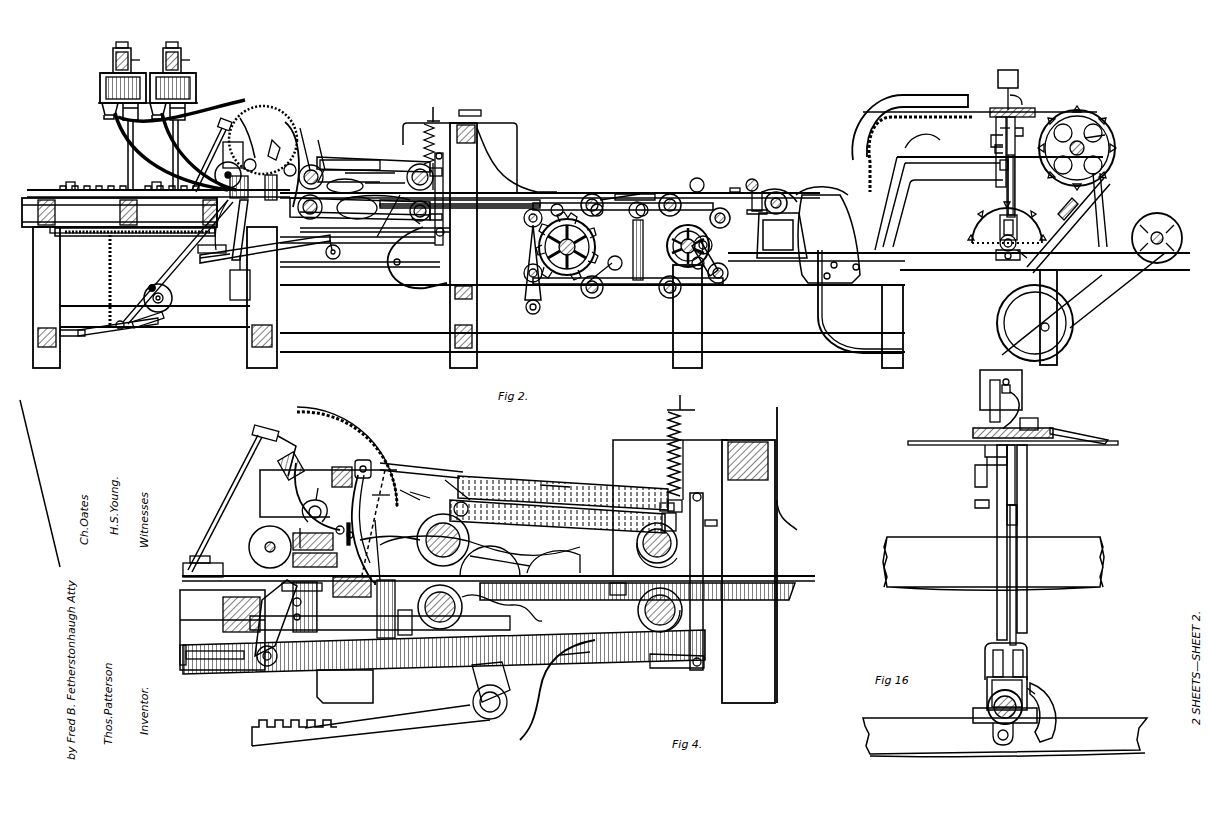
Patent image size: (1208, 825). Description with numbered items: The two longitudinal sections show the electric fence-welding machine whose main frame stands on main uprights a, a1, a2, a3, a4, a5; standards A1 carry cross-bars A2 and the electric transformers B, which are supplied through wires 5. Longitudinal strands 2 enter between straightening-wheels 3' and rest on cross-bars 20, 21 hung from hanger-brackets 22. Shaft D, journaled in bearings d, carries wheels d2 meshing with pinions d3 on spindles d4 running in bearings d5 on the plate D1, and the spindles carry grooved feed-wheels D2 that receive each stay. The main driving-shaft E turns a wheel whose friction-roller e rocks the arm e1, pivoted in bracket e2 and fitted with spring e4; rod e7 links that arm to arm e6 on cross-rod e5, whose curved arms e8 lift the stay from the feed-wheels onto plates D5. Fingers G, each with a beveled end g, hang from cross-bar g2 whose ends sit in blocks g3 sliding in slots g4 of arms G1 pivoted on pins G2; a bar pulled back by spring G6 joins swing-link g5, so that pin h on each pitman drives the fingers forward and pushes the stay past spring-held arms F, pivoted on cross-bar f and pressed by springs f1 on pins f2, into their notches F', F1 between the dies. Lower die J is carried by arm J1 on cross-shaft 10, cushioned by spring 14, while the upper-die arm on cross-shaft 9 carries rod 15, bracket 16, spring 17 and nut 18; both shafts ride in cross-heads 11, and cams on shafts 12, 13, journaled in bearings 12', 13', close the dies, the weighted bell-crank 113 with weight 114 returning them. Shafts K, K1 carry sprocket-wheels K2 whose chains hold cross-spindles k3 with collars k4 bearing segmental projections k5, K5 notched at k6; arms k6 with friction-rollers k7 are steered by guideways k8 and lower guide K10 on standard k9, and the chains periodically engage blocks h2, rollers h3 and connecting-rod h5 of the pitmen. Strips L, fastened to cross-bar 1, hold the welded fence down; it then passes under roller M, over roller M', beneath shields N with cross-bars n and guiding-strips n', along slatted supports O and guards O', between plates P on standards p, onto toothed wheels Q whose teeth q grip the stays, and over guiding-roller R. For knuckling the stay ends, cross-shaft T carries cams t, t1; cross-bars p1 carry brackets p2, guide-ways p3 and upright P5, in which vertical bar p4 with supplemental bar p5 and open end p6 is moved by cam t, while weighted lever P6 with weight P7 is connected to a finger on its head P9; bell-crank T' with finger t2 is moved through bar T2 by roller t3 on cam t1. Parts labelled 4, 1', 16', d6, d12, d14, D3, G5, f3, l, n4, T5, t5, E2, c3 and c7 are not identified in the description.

In FIG. 2, the frame leg a is at (60, 352).
In FIG. 2, the frame leg a1 is at (277, 352).
In FIG. 2, the frame leg / burner cap a2 is at (450, 350).
In FIG. 2, the frame leg / lever a3 is at (702, 360).
In FIG. 4, the frame leg / lever a3 is at (458, 715).
In FIG. 2, the frame leg a4 is at (903, 360).
In FIG. 2, the frame leg a5 is at (1057, 360).
In FIG. 2, the rack bar / cable 2 is at (40, 190).
In FIG. 2, the stop block 3' is at (98, 179).
In FIG. 4, the stop block 3' is at (185, 569).
In FIG. 2, the guide arc 4 is at (262, 106).
In FIG. 4, the guide arc 4 is at (358, 420).
In FIG. 2, the pin 5 is at (1005, 128).
In FIG. 4, the pin 5 is at (350, 526).
In FIG. 2, the burner casing B is at (100, 92).
In FIG. 2, the burner head A2 is at (113, 62).
In FIG. 2, the burner standard A1 is at (126, 134).
In FIG. 2, the hose e6 is at (242, 100).
In FIG. 4, the hose e6 is at (287, 447).
In FIG. 2, the connecting rod e7 is at (218, 136).
In FIG. 2, the link e5 is at (247, 131).
In FIG. 4, the link e5 is at (298, 455).
In FIG. 2, the pin e8 is at (249, 150).
In FIG. 2, the disc D is at (216, 166).
In FIG. 4, the disc D is at (262, 540).
In FIG. 2, the bracket d2 is at (243, 142).
In FIG. 4, the bracket d2 is at (258, 512).
In FIG. 2, the lever d3 is at (218, 232).
In FIG. 4, the lever d3 is at (298, 528).
In FIG. 2, the block d4 is at (290, 150).
In FIG. 4, the block d4 is at (318, 580).
In FIG. 4, the block d5 is at (377, 605).
In FIG. 4, the link d6 is at (414, 484).
In FIG. 4, the block d12 is at (350, 596).
In FIG. 4, the bar d14 is at (380, 623).
In FIG. 2, the lever D1 is at (249, 230).
In FIG. 4, the lever D1 is at (417, 612).
In FIG. 4, the block D2 is at (382, 622).
In FIG. 4, the arm D3 is at (386, 536).
In FIG. 4, the arm D5 is at (420, 489).
In FIG. 4, the arm G is at (407, 489).
In FIG. 2, the hook G2 is at (282, 130).
In FIG. 4, the hook G2 is at (314, 497).
In FIG. 2, the lever G1 is at (235, 277).
In FIG. 4, the lever G1 is at (278, 668).
In FIG. 2, the slide bar G6 is at (180, 236).
In FIG. 4, the slide bar G6 is at (190, 660).
In FIG. 4, the arm G5 is at (565, 660).
In FIG. 4, the pin g is at (365, 561).
In FIG. 2, the plate g2 is at (214, 259).
In FIG. 4, the plate g2 is at (288, 586).
In FIG. 4, the pin g3 is at (321, 555).
In FIG. 4, the pin g4 is at (290, 621).
In FIG. 2, the foot g5 is at (395, 262).
In FIG. 4, the foot g5 is at (690, 668).
In FIG. 2, the spring arm F is at (297, 147).
In FIG. 4, the curved arm F' is at (370, 499).
In FIG. 2, the plate F1 is at (345, 160).
In FIG. 4, the block f is at (340, 468).
In FIG. 2, the rod f1 is at (324, 145).
In FIG. 4, the rod f1 is at (390, 470).
In FIG. 2, the rod f2 is at (309, 139).
In FIG. 4, the link f3 is at (364, 496).
In FIG. 4, the bar 1 is at (534, 475).
In FIG. 2, the bar 1' is at (373, 147).
In FIG. 4, the bar 1' is at (559, 468).
In FIG. 2, the cam 9 is at (370, 174).
In FIG. 4, the cam 9 is at (503, 557).
In FIG. 2, the cam 10 is at (385, 182).
In FIG. 4, the cam 10 is at (553, 556).
In FIG. 2, the bearing bar 11 is at (345, 225).
In FIG. 4, the bearing bar 11 is at (545, 532).
In FIG. 2, the rod 113 is at (312, 250).
In FIG. 2, the pivot 114 is at (330, 258).
In FIG. 2, the pin 12 is at (452, 170).
In FIG. 4, the pin 12 is at (707, 515).
In FIG. 2, the roller 12' is at (443, 169).
In FIG. 4, the roller 12' is at (707, 513).
In FIG. 2, the bar 13 is at (682, 189).
In FIG. 4, the bar 13 is at (588, 537).
In FIG. 2, the roller 13' is at (453, 224).
In FIG. 4, the roller 13' is at (706, 621).
In FIG. 2, the hook 14 is at (417, 257).
In FIG. 4, the hook 14 is at (564, 690).
In FIG. 2, the rod 15 is at (425, 124).
In FIG. 4, the rod 15 is at (685, 440).
In FIG. 2, the spring 16 is at (427, 131).
In FIG. 4, the spring 16 is at (667, 445).
In FIG. 2, the cap 16' is at (467, 106).
In FIG. 2, the block 17 is at (470, 124).
In FIG. 4, the block 17 is at (683, 462).
In FIG. 2, the rod 18 is at (437, 192).
In FIG. 4, the rod 18 is at (697, 572).
In FIG. 2, the rail 20 is at (515, 172).
In FIG. 2, the block 21 is at (377, 245).
In FIG. 4, the block 21 is at (612, 593).
In FIG. 2, the frame 22 is at (460, 157).
In FIG. 4, the frame 22 is at (720, 440).
In FIG. 2, the frame / link L is at (500, 167).
In FIG. 4, the frame / link L is at (782, 492).
In FIG. 2, the plate n is at (612, 222).
In FIG. 4, the plate n is at (639, 580).
In FIG. 2, the rod / plank h is at (940, 172).
In FIG. 4, the rod / plank h is at (690, 578).
In FIG. 16, the rod / plank h is at (965, 543).
In FIG. 2, the bar h2 is at (625, 192).
In FIG. 2, the roller h3 is at (580, 190).
In FIG. 2, the roller h5 is at (700, 178).
In FIG. 2, the gear K is at (572, 283).
In FIG. 2, the connecting bar K1 is at (625, 212).
In FIG. 2, the arm K2 is at (528, 245).
In FIG. 2, the arm K5 is at (710, 236).
In FIG. 2, the roller K10 is at (596, 298).
In FIG. 2, the roller k3 is at (680, 198).
In FIG. 2, the link k4 is at (605, 198).
In FIG. 2, the gear k5 is at (590, 196).
In FIG. 2, the roller k6 is at (715, 208).
In FIG. 2, the roller k7 is at (705, 200).
In FIG. 2, the roller k8 is at (617, 270).
In FIG. 2, the shaft k9 is at (640, 282).
In FIG. 2, the knob l is at (735, 188).
In FIG. 2, the roller M is at (767, 186).
In FIG. 2, the guide M' is at (787, 182).
In FIG. 2, the plate N is at (829, 232).
In FIG. 2, the guide n' is at (822, 186).
In FIG. 2, the arm n4 is at (905, 145).
In FIG. 2, the chain O is at (917, 154).
In FIG. 2, the hood O' is at (910, 117).
In FIG. 2, the plate P is at (1022, 108).
In FIG. 16, the plate P is at (973, 432).
In FIG. 2, the bracket P5 is at (1000, 70).
In FIG. 16, the bracket P5 is at (980, 385).
In FIG. 16, the pin P6 is at (1010, 388).
In FIG. 2, the rod P7 is at (1009, 70).
In FIG. 16, the rod P7 is at (990, 395).
In FIG. 2, the hook P9 is at (1020, 95).
In FIG. 16, the hook P9 is at (1020, 420).
In FIG. 2, the rod p is at (993, 146).
In FIG. 2, the bracket p1 is at (1023, 143).
In FIG. 16, the bracket p1 is at (985, 450).
In FIG. 2, the rod p2 is at (1025, 141).
In FIG. 16, the rod p2 is at (1065, 488).
In FIG. 2, the rod p3 is at (1050, 112).
In FIG. 16, the rod p3 is at (1010, 480).
In FIG. 16, the rod p4 is at (1028, 522).
In FIG. 2, the rod p5 is at (1018, 190).
In FIG. 16, the rod p5 is at (1018, 565).
In FIG. 2, the yoke p6 is at (1020, 218).
In FIG. 16, the yoke p6 is at (1025, 652).
In FIG. 2, the gear wheel Q is at (1090, 118).
In FIG. 2, the pin q is at (1112, 135).
In FIG. 2, the pulley R is at (1089, 287).
In FIG. 2, the shaft T is at (996, 275).
In FIG. 16, the shaft T is at (987, 700).
In FIG. 2, the bracket T' is at (1020, 166).
In FIG. 16, the bracket T' is at (1041, 417).
In FIG. 16, the block T2 is at (1030, 534).
In FIG. 2, the gear T5 is at (982, 240).
In FIG. 16, the cam t is at (1030, 695).
In FIG. 2, the cam t1 is at (1012, 268).
In FIG. 16, the cam t1 is at (1050, 697).
In FIG. 16, the bar t2 is at (1062, 432).
In FIG. 16, the pin t3 is at (990, 735).
In FIG. 2, the rod t5 is at (1108, 218).
In FIG. 2, the disc E is at (166, 290).
In FIG. 2, the lever E2 is at (172, 298).
In FIG. 2, the pin e is at (151, 281).
In FIG. 2, the pivot e1 is at (124, 328).
In FIG. 2, the slide e2 is at (80, 334).
In FIG. 2, the link e4 is at (152, 318).
In FIG. 2, the spring c3 is at (108, 300).
In FIG. 4, the rod c7 is at (228, 490).
In FIG. 4, the pedestal J is at (345, 686).
In FIG. 2, the bar J1 is at (375, 209).
In FIG. 4, the bar J1 is at (555, 640).
In FIG. 2, the pin d is at (287, 142).